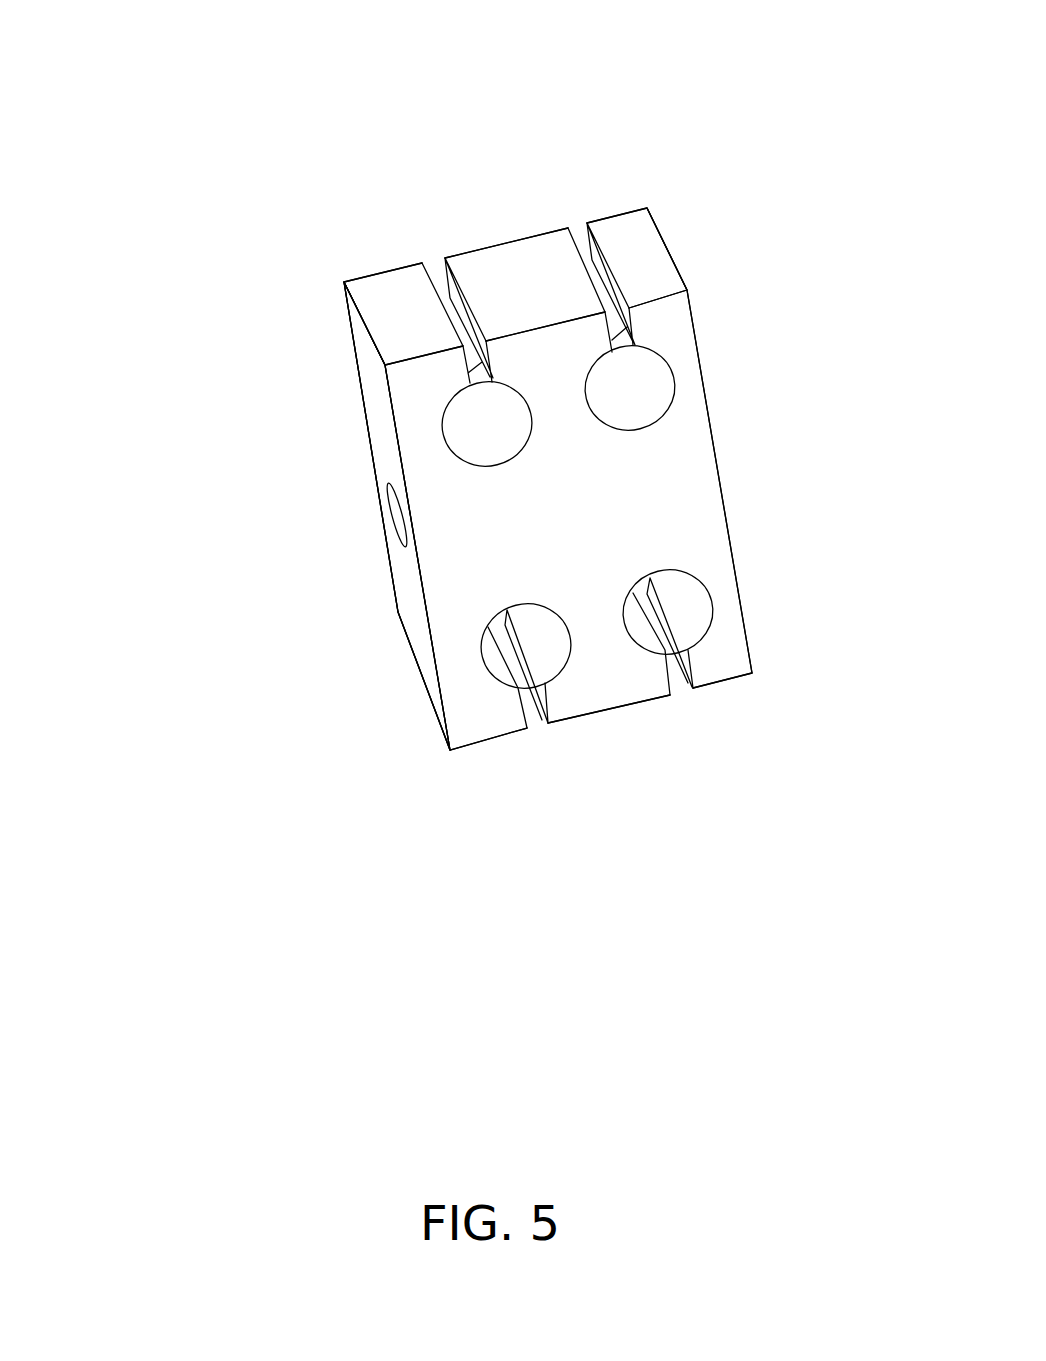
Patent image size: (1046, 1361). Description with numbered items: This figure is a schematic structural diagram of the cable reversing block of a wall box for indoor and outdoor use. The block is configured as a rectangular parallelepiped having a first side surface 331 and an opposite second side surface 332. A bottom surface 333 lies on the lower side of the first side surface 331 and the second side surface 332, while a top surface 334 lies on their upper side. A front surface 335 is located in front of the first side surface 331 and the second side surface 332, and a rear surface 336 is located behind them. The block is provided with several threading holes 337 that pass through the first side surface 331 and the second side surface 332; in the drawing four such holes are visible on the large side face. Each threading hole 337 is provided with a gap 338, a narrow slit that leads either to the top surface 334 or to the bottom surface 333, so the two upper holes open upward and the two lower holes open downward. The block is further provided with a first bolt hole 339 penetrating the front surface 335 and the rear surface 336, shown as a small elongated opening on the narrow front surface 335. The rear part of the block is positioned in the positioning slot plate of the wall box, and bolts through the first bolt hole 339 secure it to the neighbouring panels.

The first side surface 331 is at (528, 535).
The second side surface 332 is at (383, 273).
The bottom surface 333 is at (726, 690).
The top surface 334 is at (517, 287).
The front surface 335 is at (377, 403).
The rear surface 336 is at (700, 356).
The threading hole 337 is at (503, 663).
The gap 338 is at (457, 273).
The first bolt hole 339 is at (392, 522).